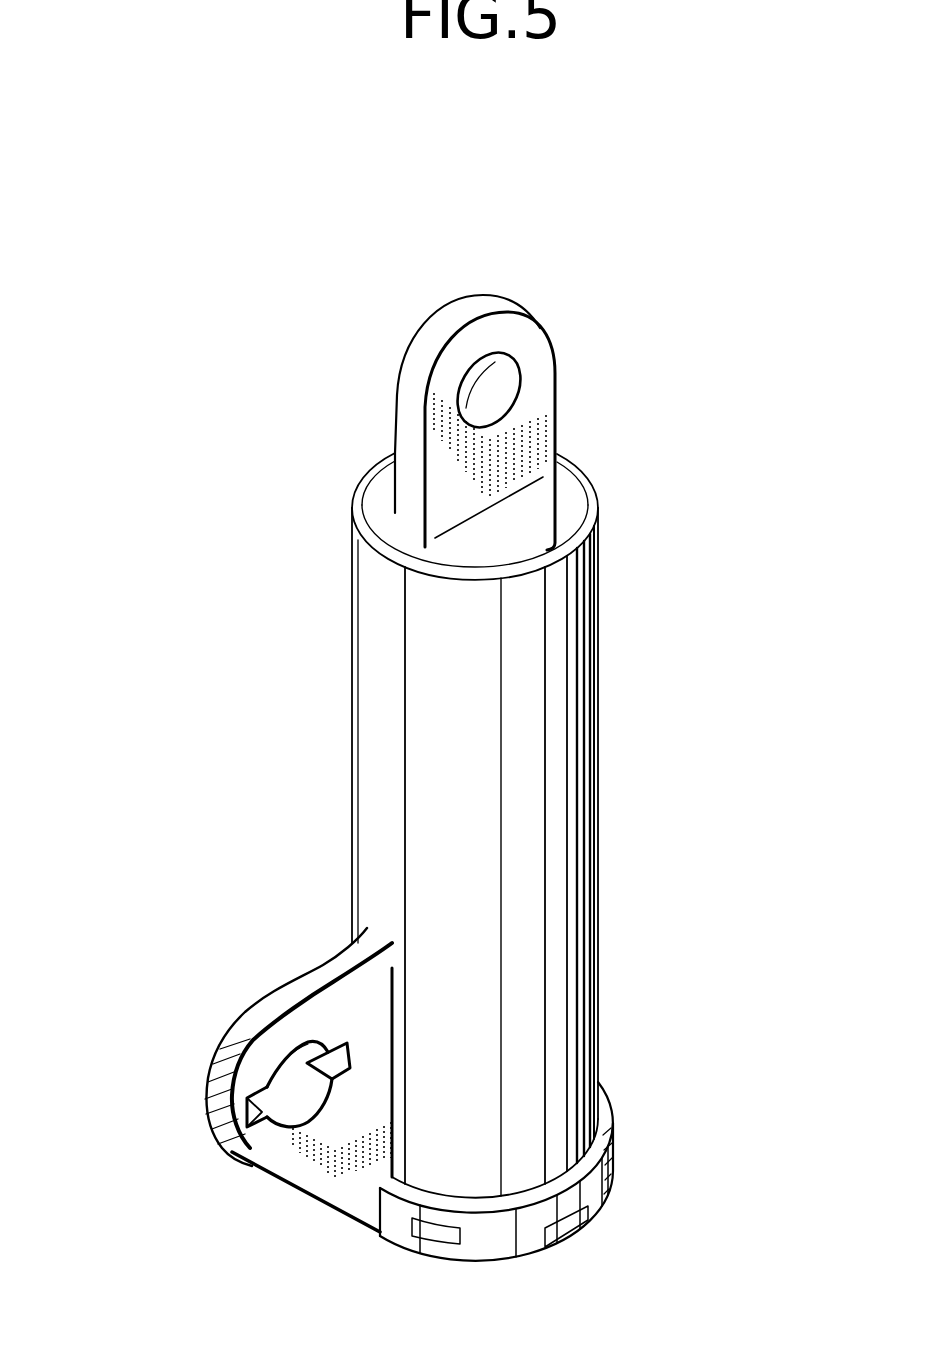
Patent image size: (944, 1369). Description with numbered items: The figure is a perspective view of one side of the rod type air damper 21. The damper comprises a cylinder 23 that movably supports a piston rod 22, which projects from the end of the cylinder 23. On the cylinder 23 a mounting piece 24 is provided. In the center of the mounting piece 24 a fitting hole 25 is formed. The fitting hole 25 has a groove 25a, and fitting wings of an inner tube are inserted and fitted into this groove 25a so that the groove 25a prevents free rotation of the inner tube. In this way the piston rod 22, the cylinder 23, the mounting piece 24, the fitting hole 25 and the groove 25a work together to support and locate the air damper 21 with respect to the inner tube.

The rod type air damper 21 is at (703, 840).
The piston rod 22 is at (547, 430).
The cylinder 23 is at (567, 1045).
The mounting piece 24 is at (232, 1040).
The fitting hole 25 is at (303, 1105).
The groove 25a is at (347, 1042).